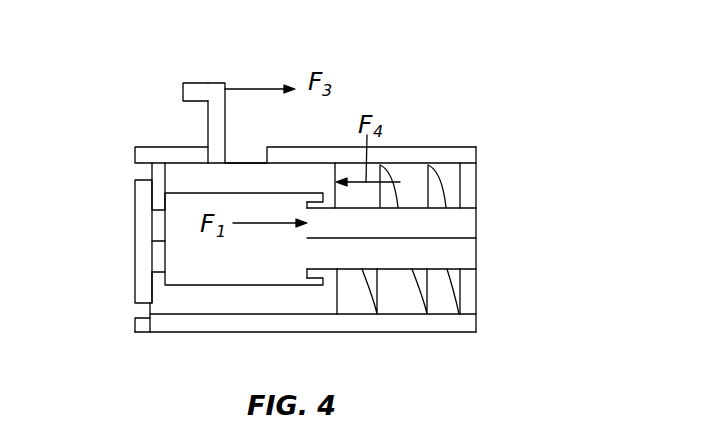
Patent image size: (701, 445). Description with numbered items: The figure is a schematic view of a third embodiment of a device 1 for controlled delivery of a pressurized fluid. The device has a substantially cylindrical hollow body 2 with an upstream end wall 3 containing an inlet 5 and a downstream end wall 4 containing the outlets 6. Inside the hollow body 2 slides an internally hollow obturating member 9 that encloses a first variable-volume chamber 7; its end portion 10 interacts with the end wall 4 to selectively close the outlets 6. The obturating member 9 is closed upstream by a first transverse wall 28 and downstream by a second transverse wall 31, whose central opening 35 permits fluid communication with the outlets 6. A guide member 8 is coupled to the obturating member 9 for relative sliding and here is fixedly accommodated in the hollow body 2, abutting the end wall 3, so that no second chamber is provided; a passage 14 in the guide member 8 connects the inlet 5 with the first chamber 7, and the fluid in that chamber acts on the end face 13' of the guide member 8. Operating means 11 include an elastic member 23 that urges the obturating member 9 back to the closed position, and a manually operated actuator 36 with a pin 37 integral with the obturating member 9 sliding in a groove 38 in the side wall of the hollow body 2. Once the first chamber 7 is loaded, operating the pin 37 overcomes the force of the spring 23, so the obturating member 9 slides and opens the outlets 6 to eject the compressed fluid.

The device 1 is at (512, 121).
The hollow body 2 is at (463, 323).
The end wall 3 is at (477, 320).
The end wall 4 is at (135, 327).
The inlet 5 is at (480, 237).
The outlets 6 is at (140, 172).
The first variable-volume chamber 7 is at (256, 267).
The guide member 8 is at (376, 158).
The obturating member 9 is at (247, 303).
The end portion 10 is at (165, 177).
The operating means 11 is at (484, 212).
The end face 13' is at (286, 287).
The passage 14 is at (418, 240).
The elastic member 23 is at (440, 182).
The first transverse wall 28 is at (332, 301).
The second transverse wall 31 is at (143, 317).
The central opening 35 is at (160, 242).
The actuator 36 is at (179, 84).
The pin 37 is at (208, 98).
The groove 38 is at (248, 157).